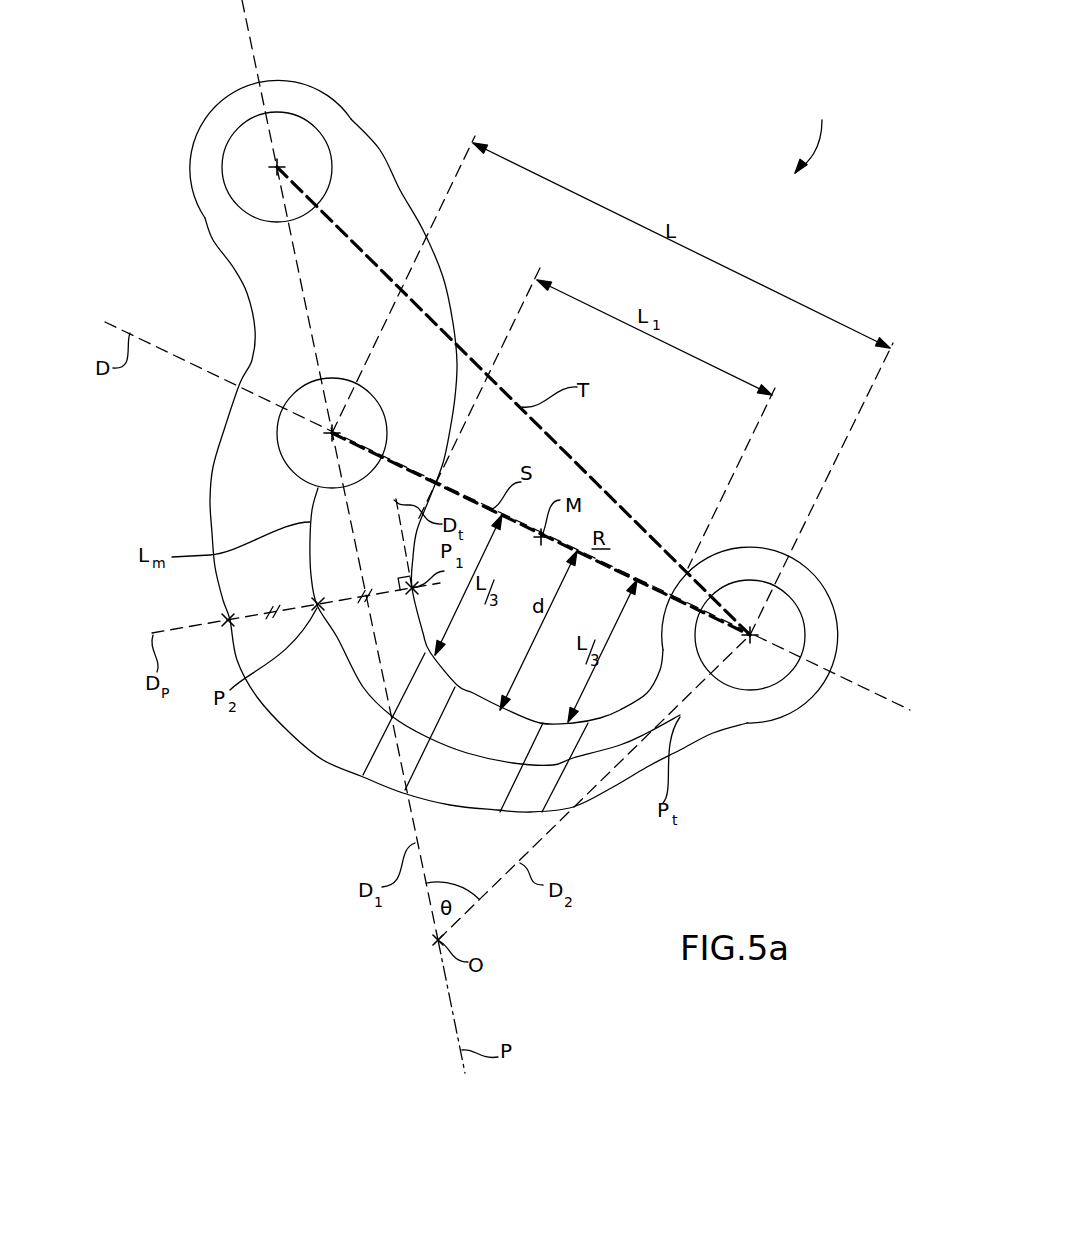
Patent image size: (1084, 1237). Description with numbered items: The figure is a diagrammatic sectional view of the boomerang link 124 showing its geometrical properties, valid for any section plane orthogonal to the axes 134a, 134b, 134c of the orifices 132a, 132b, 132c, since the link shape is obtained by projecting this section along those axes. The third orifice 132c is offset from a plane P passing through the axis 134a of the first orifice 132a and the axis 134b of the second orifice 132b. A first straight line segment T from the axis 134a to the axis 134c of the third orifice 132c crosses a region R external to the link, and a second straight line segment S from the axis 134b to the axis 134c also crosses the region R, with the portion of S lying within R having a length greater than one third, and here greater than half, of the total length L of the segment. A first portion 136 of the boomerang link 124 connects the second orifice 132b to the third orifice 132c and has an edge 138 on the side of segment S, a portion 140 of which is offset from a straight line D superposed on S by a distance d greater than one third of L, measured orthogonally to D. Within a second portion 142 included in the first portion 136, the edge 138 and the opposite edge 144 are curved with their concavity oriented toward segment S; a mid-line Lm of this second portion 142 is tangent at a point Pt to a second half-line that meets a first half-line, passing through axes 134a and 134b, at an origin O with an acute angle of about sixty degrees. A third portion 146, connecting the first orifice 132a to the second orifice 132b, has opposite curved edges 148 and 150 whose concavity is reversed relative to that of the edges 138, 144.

The boomerang link 124 is at (830, 136).
The first orifice 132a is at (298, 118).
The second orifice 132b is at (288, 428).
The third orifice 132c is at (768, 686).
The axis of the first orifice 134a is at (277, 167).
The axis of the second orifice 134b is at (332, 433).
The axis of the third orifice 134c is at (751, 635).
The first portion 136 is at (317, 708).
The second portion 142 is at (491, 446).
The edge 138 is at (607, 717).
The portion of the edge 140 is at (475, 693).
The opposite edge 144 is at (350, 770).
The third portion 146 is at (260, 243).
The curved edge 148 is at (393, 166).
The curved edge 150 is at (247, 280).